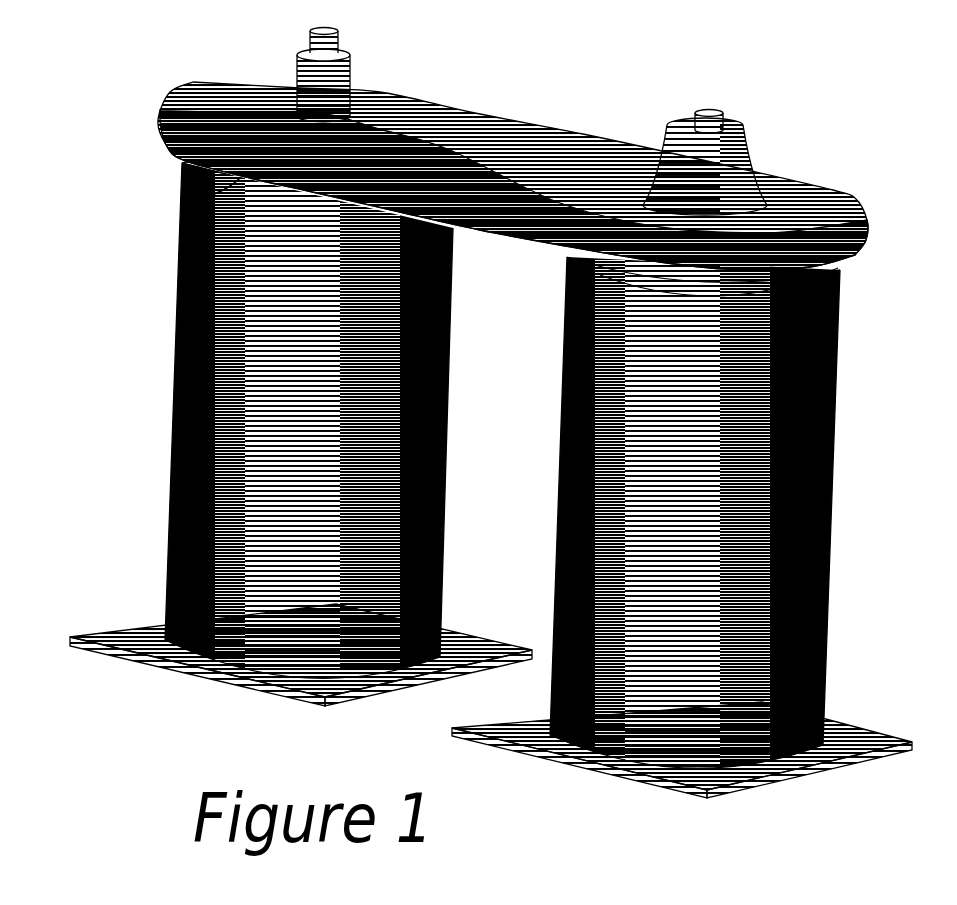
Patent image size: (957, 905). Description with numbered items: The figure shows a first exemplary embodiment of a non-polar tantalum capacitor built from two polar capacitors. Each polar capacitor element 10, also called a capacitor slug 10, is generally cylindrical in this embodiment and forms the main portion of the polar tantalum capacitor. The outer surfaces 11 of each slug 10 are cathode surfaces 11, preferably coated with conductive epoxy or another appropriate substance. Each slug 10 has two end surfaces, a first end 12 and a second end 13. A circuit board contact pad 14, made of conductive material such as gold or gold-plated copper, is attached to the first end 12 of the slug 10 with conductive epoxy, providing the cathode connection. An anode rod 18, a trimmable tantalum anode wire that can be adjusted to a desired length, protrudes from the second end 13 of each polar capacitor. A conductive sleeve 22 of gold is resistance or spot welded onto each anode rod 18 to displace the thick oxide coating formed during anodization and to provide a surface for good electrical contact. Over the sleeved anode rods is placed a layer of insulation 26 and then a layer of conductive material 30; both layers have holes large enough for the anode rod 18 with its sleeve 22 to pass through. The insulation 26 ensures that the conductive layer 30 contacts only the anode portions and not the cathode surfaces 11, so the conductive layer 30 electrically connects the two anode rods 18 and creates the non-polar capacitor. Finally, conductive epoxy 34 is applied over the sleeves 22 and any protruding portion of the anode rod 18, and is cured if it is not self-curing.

The polar capacitor element 10 is at (489, 480).
The cathode surfaces 11 is at (210, 382).
The first end 12 is at (165, 630).
The second end 13 is at (187, 165).
The circuit board contact pad 14 is at (840, 740).
The anode rod 18 is at (307, 42).
The conductive sleeve 22 is at (352, 70).
The insulation layer 26 is at (183, 205).
The conductive layer 30 is at (508, 132).
The conductive epoxy 34 is at (685, 145).